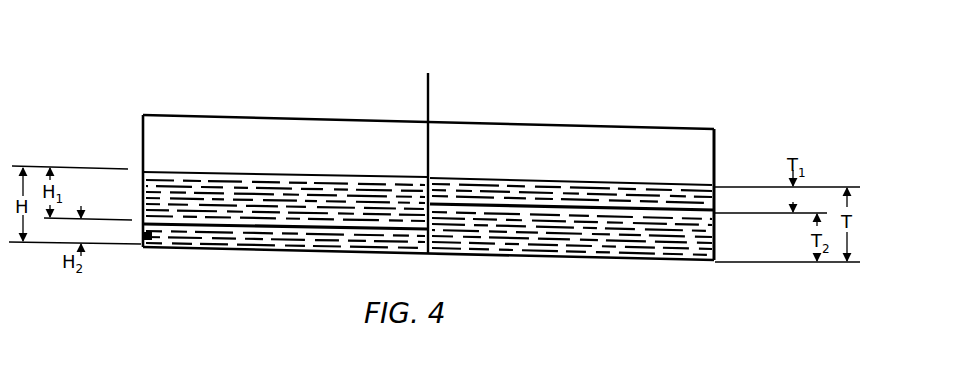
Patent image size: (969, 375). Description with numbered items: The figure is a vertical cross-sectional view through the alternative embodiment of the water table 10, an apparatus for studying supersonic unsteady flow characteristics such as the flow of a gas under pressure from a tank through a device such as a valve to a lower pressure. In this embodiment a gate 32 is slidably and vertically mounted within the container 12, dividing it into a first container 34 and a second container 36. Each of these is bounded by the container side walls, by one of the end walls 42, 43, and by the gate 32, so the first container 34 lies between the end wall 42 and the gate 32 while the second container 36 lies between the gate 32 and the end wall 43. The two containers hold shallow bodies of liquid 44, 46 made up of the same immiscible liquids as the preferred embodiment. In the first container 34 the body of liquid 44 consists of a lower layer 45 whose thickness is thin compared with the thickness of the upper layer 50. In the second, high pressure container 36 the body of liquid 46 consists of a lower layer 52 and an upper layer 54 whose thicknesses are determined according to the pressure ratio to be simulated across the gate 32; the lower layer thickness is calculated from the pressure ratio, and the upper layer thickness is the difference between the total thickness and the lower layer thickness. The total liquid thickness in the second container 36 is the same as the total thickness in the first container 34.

The water table 10 is at (629, 59).
The container 12 is at (615, 124).
The gate 32 is at (431, 147).
The first container 34 is at (291, 163).
The second container 36 is at (568, 171).
The end wall 42 is at (142, 131).
The end wall 43 is at (715, 145).
The body of liquid 44 is at (143, 228).
The lower layer 45 is at (143, 235).
The body of liquid 46 is at (715, 199).
The upper layer 50 is at (143, 201).
The lower layer 52 is at (715, 242).
The upper layer 54 is at (715, 192).